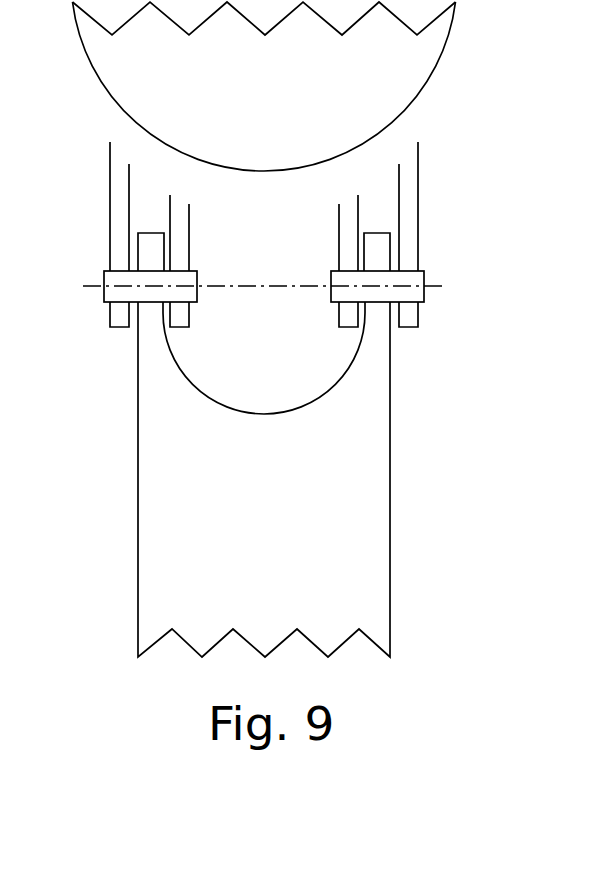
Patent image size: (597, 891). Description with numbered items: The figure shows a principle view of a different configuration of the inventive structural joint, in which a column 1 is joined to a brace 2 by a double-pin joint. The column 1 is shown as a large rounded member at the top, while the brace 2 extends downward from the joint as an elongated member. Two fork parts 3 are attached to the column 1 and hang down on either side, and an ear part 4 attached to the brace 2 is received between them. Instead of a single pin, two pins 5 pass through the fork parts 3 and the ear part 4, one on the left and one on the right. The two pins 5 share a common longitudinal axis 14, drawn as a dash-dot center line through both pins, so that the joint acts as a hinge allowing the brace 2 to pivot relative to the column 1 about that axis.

The column 1 is at (415, 90).
The brace 2 is at (348, 492).
The fork parts 3 is at (178, 213).
The ear part 4 is at (152, 335).
The pin 5 is at (117, 291).
The common longitudinal axis 14 is at (492, 283).